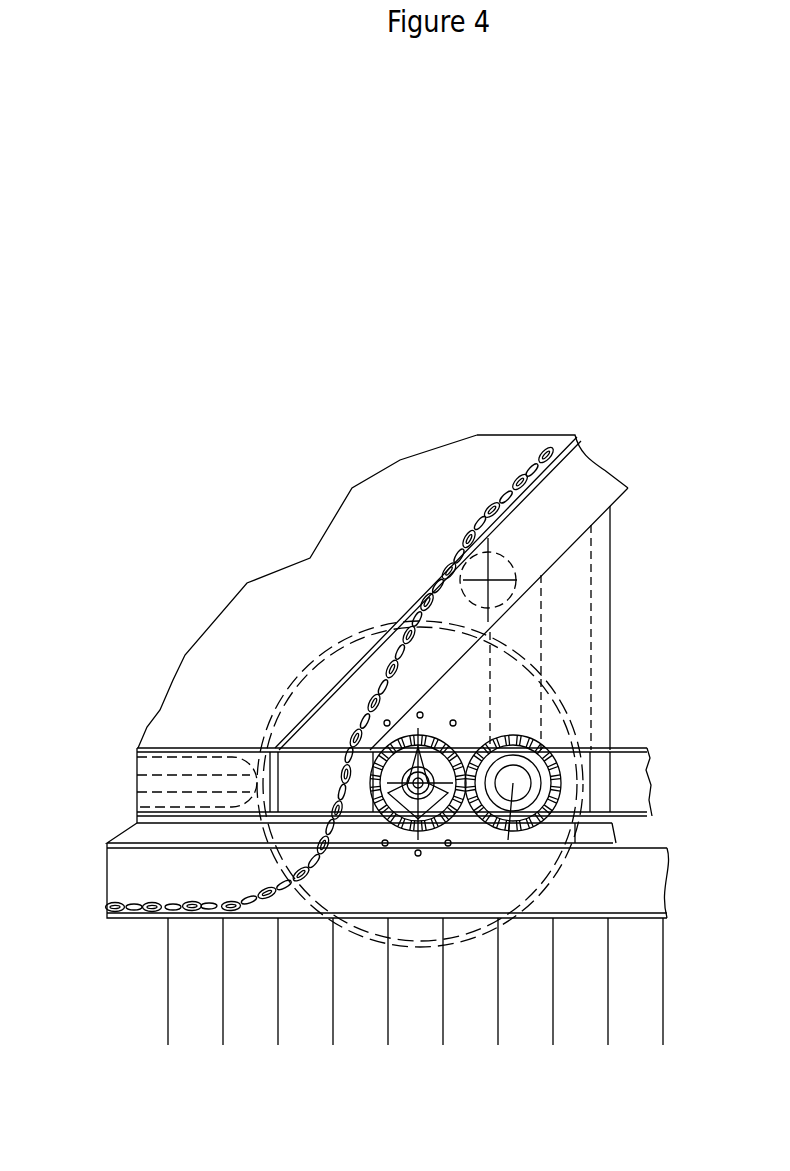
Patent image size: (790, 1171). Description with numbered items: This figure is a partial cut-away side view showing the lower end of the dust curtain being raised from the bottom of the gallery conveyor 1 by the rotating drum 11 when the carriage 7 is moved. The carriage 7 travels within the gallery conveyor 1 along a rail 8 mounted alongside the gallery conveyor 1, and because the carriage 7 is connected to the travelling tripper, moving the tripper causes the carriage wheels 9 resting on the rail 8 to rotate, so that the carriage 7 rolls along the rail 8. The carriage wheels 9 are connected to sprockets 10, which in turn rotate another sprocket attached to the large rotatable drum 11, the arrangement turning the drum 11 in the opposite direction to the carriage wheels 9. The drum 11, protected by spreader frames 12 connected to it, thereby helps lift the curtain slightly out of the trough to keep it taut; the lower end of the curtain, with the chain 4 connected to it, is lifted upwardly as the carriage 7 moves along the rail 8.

The gallery conveyor 1 is at (108, 843).
The chain 4 is at (123, 905).
The carriage 7 is at (188, 747).
The rail 8 is at (617, 838).
The carriage wheels 9 is at (548, 742).
The sprockets 10 is at (552, 760).
The rotatable drum 11 is at (313, 660).
The spreader frames 12 is at (172, 770).